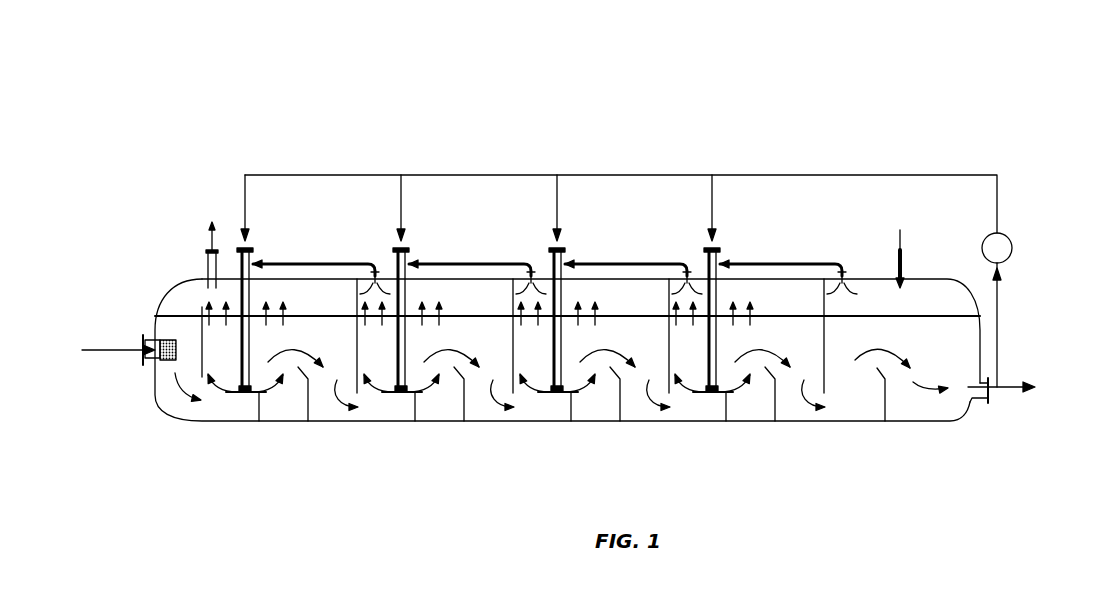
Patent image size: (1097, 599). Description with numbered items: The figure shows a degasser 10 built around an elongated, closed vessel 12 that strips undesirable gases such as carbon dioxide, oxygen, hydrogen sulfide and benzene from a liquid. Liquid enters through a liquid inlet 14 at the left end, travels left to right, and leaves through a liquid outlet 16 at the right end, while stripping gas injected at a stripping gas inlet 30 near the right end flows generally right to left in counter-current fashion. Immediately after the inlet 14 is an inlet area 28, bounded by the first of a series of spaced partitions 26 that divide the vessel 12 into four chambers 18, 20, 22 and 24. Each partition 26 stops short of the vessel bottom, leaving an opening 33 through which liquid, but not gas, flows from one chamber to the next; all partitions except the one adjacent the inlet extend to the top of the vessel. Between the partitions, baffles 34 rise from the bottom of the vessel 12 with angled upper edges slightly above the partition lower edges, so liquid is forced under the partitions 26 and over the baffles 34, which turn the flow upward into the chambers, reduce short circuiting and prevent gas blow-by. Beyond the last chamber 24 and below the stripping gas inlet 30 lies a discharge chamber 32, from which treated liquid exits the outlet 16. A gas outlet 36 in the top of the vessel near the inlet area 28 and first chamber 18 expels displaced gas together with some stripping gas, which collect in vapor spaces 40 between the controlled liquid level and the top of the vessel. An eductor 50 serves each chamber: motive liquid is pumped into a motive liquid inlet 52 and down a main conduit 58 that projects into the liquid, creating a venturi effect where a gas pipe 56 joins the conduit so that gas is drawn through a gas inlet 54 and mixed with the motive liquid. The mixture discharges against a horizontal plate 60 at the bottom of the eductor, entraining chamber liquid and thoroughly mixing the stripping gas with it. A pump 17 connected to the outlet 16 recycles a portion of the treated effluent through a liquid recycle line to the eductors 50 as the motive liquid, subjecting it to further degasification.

The degasser 10 is at (763, 72).
The vessel 12 is at (197, 421).
The liquid inlet 14 is at (150, 362).
The liquid outlet 16 is at (978, 396).
The pump 17 is at (1006, 236).
The first chamber 18 is at (337, 342).
The second chamber 20 is at (491, 342).
The third chamber 22 is at (645, 342).
The fourth chamber 24 is at (803, 342).
The partition 26 is at (202, 333).
The inlet area 28 is at (182, 355).
The stripping gas inlet 30 is at (903, 279).
The discharge chamber 32 is at (950, 343).
The opening 33 is at (247, 405).
The baffle 34 is at (303, 405).
The gas outlet 36 is at (207, 266).
The vapor space 40 is at (305, 297).
The eductor 50 is at (240, 398).
The motive liquid inlet 52 is at (250, 247).
The gas inlet 54 is at (375, 266).
The gas pipe 56 is at (370, 262).
The main conduit 58 is at (255, 349).
The horizontal plate 60 is at (261, 394).